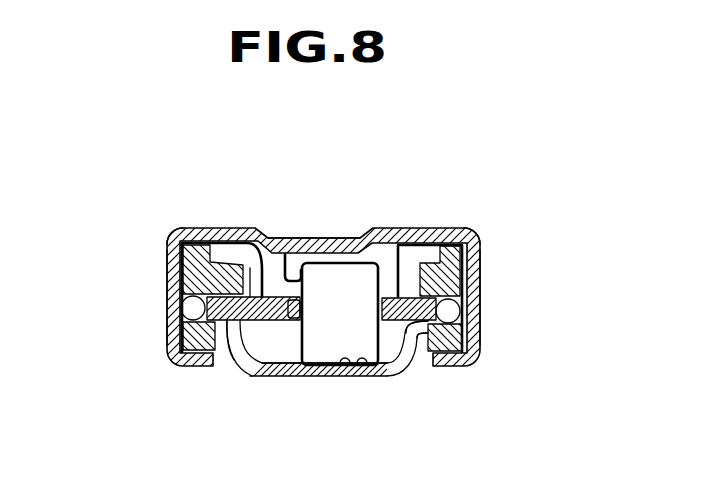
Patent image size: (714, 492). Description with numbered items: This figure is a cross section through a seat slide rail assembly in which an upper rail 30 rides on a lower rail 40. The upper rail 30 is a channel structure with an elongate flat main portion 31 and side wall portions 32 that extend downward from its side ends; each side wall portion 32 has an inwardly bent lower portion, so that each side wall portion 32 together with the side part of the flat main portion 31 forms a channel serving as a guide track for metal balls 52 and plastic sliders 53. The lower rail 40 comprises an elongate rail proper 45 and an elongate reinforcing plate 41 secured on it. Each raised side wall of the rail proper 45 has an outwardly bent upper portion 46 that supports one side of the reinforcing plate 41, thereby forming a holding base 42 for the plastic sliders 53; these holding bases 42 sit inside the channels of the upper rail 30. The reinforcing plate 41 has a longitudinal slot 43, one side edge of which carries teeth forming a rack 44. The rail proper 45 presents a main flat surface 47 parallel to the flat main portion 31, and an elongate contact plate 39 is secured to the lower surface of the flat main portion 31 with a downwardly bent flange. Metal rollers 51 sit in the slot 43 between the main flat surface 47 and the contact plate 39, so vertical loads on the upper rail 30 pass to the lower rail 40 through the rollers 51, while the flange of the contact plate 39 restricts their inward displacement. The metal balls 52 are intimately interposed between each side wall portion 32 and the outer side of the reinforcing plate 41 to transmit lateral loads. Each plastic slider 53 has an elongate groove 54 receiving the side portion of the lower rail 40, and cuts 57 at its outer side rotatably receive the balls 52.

The upper rail 30 is at (413, 223).
The elongate flat main portion 31 is at (348, 237).
The side wall portions 32 is at (170, 310).
The contact plate 39 is at (318, 247).
The lower rail 40 is at (297, 389).
The reinforcing plate 41 is at (260, 284).
The holding base 42 is at (186, 288).
The slot 43 is at (247, 372).
The rack 44 is at (402, 367).
The rail proper 45 is at (270, 378).
The outwardly bent upper portion 46 is at (230, 362).
The main flat surface 47 is at (346, 377).
The metal rollers 51 is at (365, 372).
The metal balls 52 is at (184, 336).
The plastic sliders 53 is at (167, 248).
The elongate groove 54 is at (210, 229).
The cuts 57 is at (181, 305).